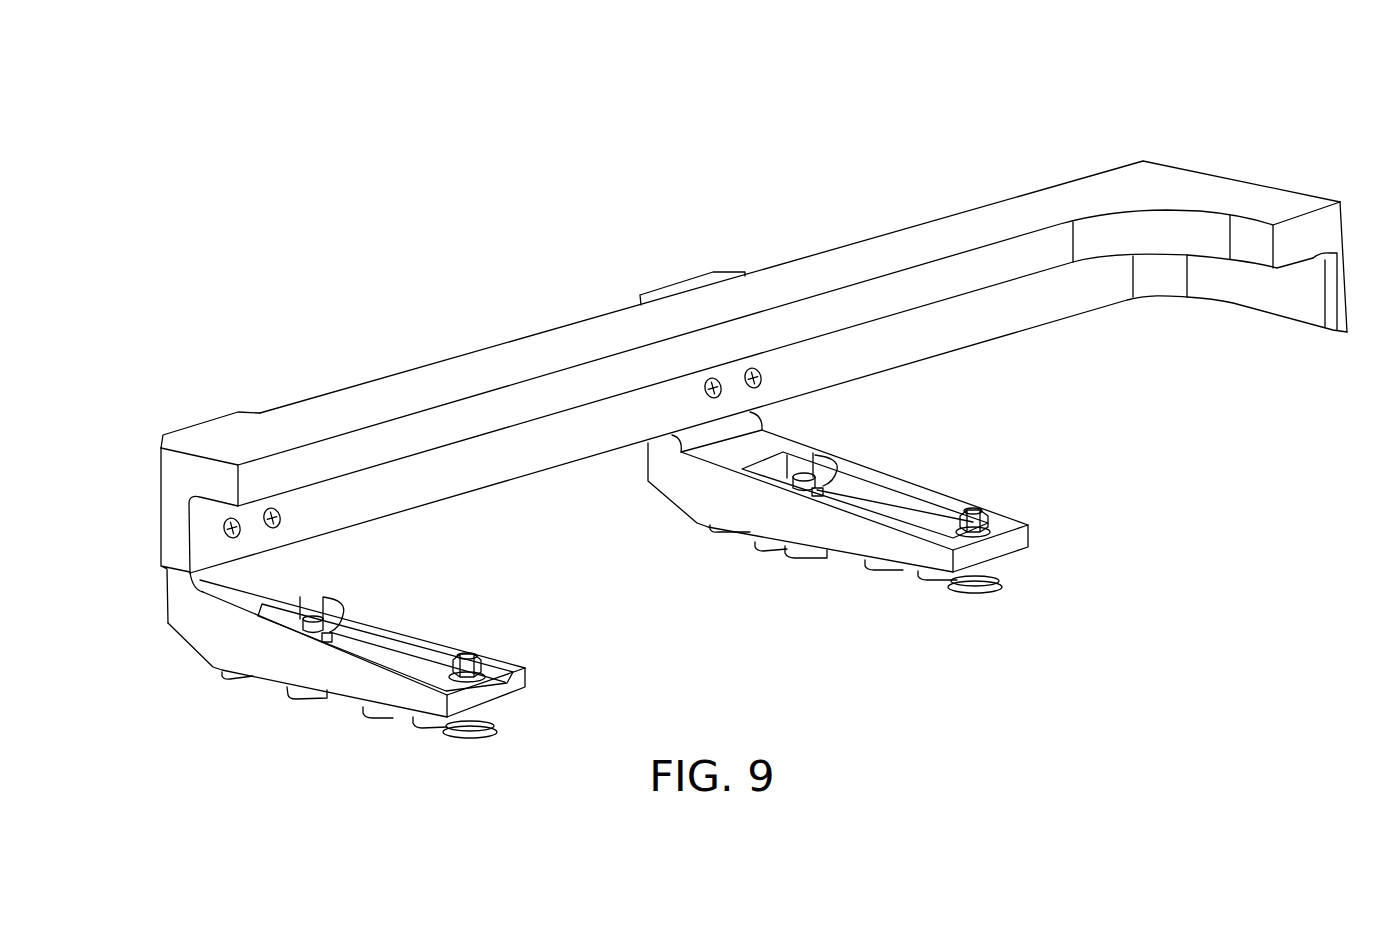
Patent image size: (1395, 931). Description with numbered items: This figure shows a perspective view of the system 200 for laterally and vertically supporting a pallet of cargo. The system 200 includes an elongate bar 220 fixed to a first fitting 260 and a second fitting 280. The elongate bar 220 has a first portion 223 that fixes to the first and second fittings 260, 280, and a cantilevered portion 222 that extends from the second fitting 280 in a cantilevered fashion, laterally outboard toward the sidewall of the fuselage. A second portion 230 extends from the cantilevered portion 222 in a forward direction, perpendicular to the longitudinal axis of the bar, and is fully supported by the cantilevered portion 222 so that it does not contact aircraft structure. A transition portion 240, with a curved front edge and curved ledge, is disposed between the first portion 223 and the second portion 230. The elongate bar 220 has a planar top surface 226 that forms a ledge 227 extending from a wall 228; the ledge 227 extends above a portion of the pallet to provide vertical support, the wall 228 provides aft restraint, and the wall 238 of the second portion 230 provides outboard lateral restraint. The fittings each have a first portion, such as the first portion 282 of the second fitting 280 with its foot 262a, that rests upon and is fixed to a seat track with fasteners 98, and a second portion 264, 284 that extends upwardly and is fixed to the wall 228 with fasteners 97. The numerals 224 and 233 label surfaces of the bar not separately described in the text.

The system 200 is at (778, 185).
The elongate bar 220 is at (952, 238).
The cantilevered portion 222 is at (906, 240).
The first portion 223 is at (543, 393).
The web face 224 is at (548, 448).
The planar top surface 226 is at (830, 273).
The ledge 227 is at (412, 432).
The wall 228 is at (588, 440).
The second portion 230 is at (1273, 212).
The inner surface of end portion 233 is at (1260, 251).
The wall of the second portion 238 is at (1308, 294).
The transition portion 240 is at (1162, 230).
The first fitting 260 is at (257, 650).
The first leg foot 262a is at (373, 673).
The second portion of the first fitting 264 is at (176, 583).
The second fitting 280 is at (727, 493).
The first portion of the second fitting 282 is at (817, 523).
The second portion of the second fitting 284 is at (688, 286).
The fasteners 97 is at (283, 515).
The fasteners 98 is at (323, 614).